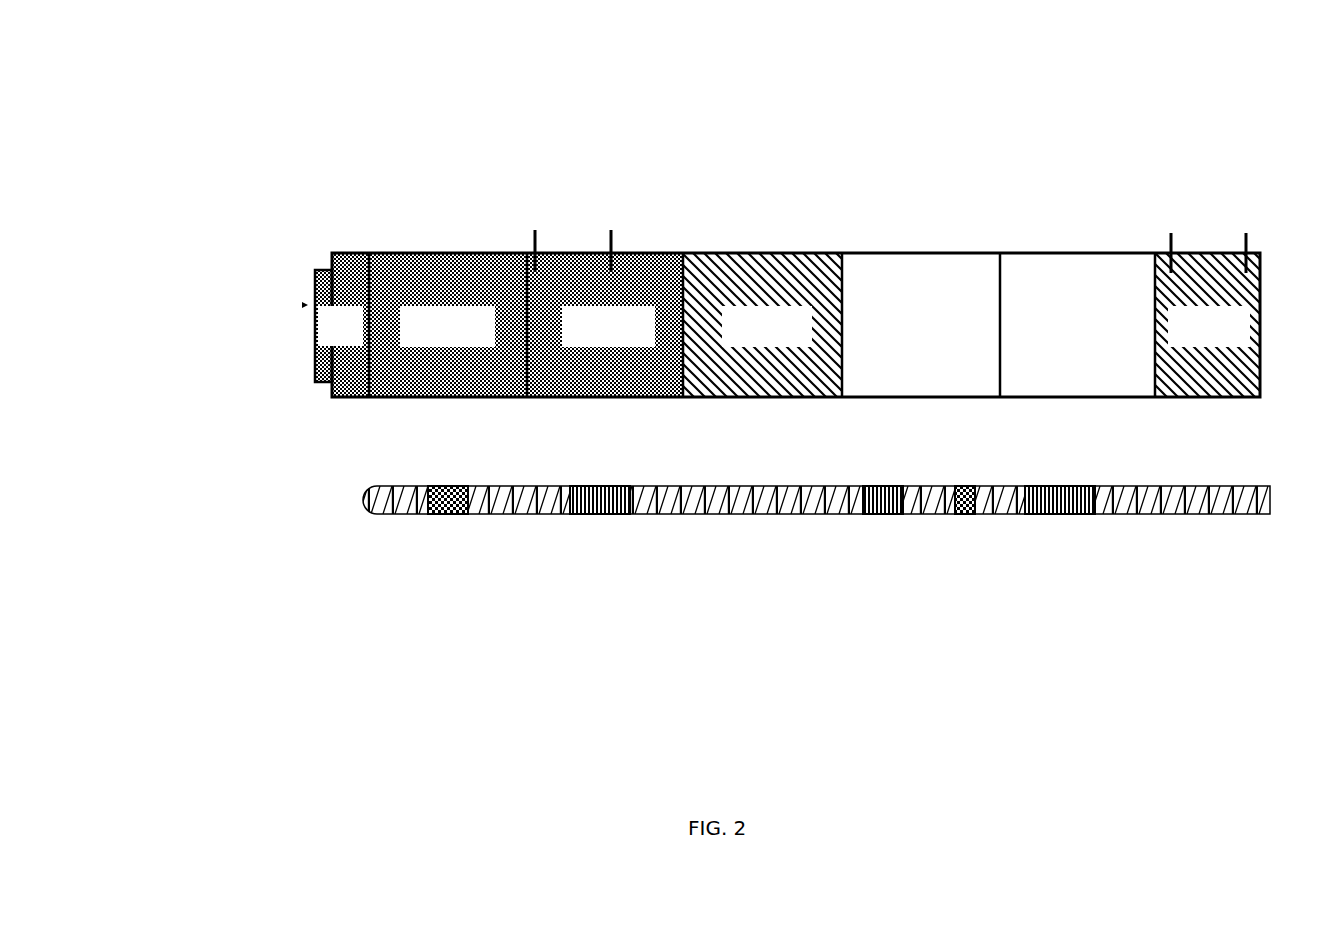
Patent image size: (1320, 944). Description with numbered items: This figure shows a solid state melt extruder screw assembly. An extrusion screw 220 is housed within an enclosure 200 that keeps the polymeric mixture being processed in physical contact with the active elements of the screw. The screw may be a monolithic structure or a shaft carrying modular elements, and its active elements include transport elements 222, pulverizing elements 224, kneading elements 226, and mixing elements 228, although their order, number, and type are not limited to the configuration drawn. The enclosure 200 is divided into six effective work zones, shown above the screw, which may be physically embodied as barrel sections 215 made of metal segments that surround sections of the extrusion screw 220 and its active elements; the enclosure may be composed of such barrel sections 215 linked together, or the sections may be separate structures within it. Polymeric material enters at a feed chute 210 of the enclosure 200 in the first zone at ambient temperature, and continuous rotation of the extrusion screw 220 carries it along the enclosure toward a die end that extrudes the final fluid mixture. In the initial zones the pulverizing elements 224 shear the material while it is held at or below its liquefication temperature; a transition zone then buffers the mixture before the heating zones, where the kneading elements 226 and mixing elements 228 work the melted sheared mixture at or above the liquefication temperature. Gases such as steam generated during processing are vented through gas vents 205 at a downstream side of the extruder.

The enclosure 200 is at (276, 167).
The gas vents 205 is at (561, 225).
The feed chute 210 is at (1191, 225).
The barrel sections 215 is at (1041, 222).
The extrusion screw 220 is at (345, 497).
The transport elements 222 is at (1157, 525).
The pulverizing elements 224 is at (1058, 535).
The kneading elements 226 is at (616, 527).
The mixing elements 228 is at (452, 535).